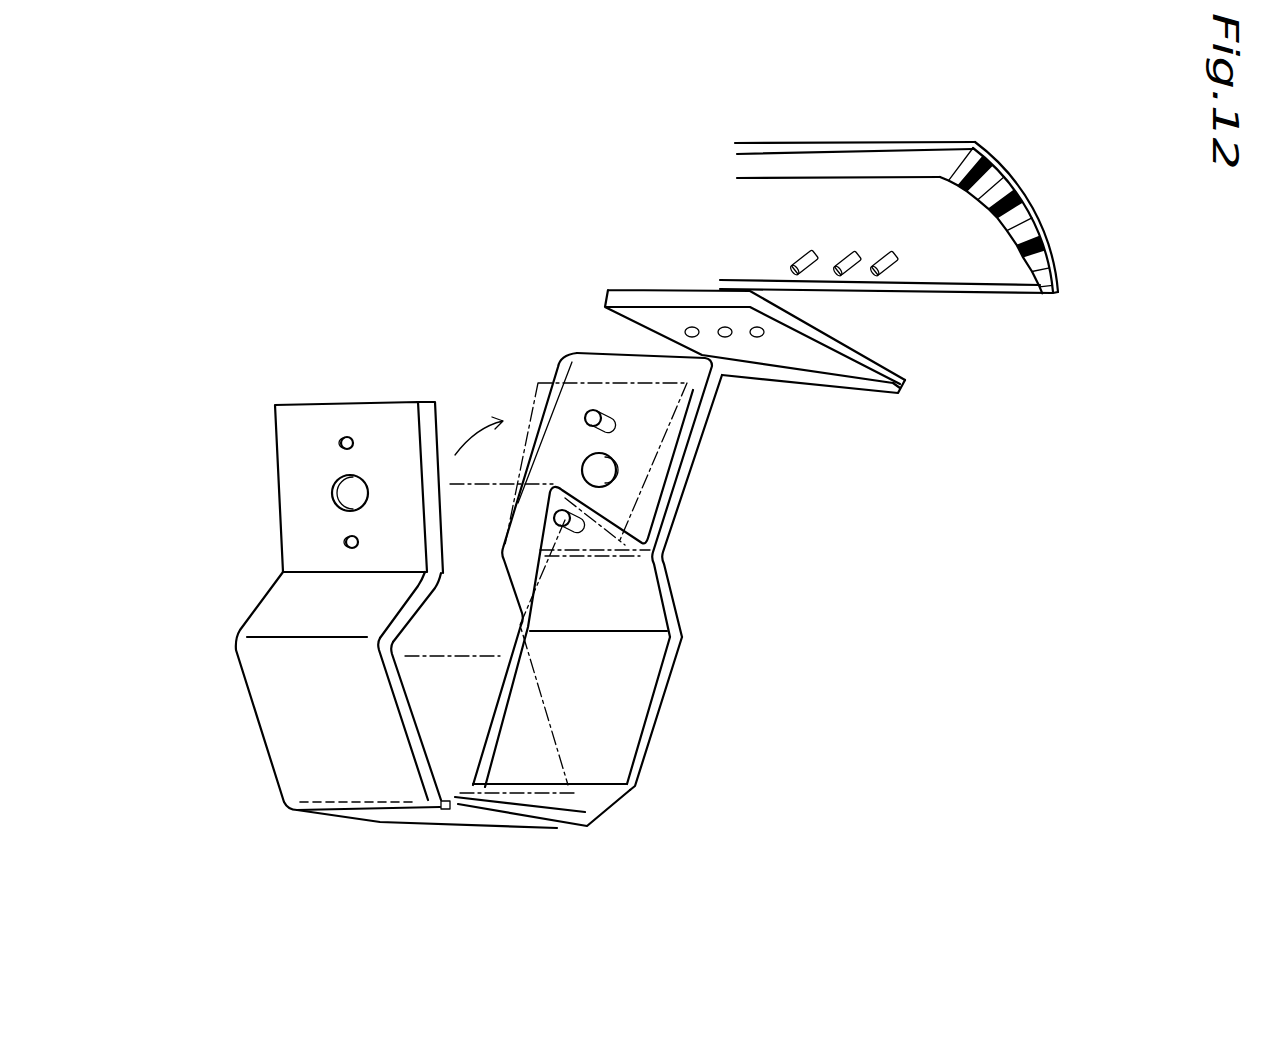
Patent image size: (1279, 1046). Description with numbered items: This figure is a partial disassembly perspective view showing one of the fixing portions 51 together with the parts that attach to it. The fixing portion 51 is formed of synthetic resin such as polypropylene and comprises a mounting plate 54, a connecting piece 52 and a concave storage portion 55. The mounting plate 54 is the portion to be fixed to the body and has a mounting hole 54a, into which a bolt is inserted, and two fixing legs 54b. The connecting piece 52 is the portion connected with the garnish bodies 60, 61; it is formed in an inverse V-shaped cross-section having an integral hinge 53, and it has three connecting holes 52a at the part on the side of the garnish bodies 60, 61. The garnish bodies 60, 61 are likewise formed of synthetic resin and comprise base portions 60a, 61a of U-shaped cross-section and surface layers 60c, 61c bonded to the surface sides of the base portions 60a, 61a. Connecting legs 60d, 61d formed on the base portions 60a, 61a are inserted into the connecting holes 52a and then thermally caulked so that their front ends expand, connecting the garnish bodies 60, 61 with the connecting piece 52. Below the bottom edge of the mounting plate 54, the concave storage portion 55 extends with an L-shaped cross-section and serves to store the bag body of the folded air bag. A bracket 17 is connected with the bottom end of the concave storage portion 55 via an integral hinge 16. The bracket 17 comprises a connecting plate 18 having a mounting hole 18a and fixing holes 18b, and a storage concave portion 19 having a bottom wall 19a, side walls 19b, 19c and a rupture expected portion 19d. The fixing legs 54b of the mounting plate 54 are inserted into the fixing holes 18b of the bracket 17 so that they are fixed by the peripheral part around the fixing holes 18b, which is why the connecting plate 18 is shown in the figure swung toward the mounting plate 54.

The integral hinge 16 is at (595, 786).
The bracket 17 is at (192, 512).
The connecting plate 18 is at (290, 492).
The mounting hole 18a is at (337, 480).
The fixing holes 18b is at (352, 438).
The storage concave portion 19 is at (285, 697).
The bottom wall 19a is at (410, 717).
The side wall 19b is at (422, 590).
The side wall 19c is at (557, 828).
The rupture expected portion 19d is at (443, 810).
The fixing portion 51 is at (886, 440).
The connecting piece 52 is at (834, 392).
The connecting holes 52a is at (692, 326).
The integral hinge 53 is at (905, 390).
The mounting plate 54 is at (677, 482).
The mounting hole 54a is at (615, 458).
The fixing legs 54b is at (585, 412).
The concave storage portion 55 is at (667, 672).
The garnish body 60 is at (947, 218).
The garnish body 61 is at (892, 187).
The base portion 60a is at (1073, 202).
The base portion 61a is at (977, 152).
The surface layer 60c is at (1067, 207).
The surface layer 61c is at (1000, 170).
The connecting legs 60d is at (924, 294).
The connecting legs 61d is at (900, 262).